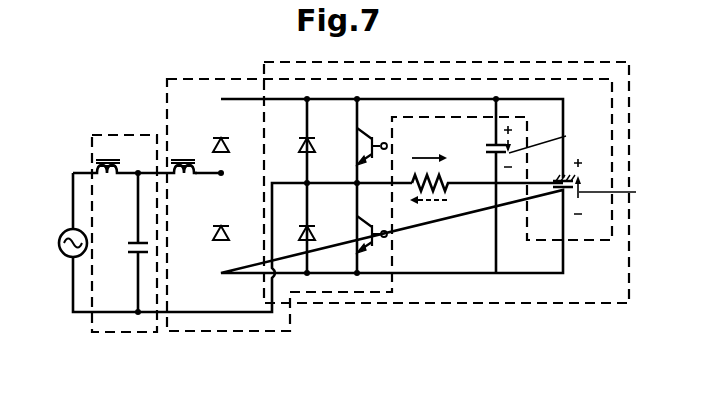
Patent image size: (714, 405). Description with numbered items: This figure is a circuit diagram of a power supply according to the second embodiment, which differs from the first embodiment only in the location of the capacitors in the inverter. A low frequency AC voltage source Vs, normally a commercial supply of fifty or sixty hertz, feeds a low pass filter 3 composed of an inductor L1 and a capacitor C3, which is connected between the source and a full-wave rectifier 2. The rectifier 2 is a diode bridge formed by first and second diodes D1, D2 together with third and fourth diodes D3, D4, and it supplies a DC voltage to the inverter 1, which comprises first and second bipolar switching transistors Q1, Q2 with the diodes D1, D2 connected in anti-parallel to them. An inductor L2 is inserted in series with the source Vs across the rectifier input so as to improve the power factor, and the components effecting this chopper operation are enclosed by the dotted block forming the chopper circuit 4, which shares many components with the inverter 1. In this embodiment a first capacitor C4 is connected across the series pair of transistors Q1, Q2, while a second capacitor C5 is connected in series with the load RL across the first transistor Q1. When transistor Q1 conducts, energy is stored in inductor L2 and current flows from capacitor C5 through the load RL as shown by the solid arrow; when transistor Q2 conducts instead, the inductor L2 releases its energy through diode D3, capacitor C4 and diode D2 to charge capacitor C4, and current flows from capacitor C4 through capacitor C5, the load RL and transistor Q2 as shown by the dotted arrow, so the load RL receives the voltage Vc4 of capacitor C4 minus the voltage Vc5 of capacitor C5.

The inverter 1 is at (461, 61).
The full-wave rectifier 2 is at (300, 255).
The low pass filter 3 is at (125, 334).
The chopper circuit 4 is at (220, 78).
The AC voltage source Vs is at (61, 256).
The capacitor C3 is at (125, 263).
The inductor L1 is at (121, 155).
The inductor L2 is at (183, 155).
The first diode D1 is at (293, 143).
The second diode D2 is at (294, 220).
The third diode D3 is at (237, 143).
The fourth diode D4 is at (236, 235).
The first switching transistor Q1 is at (357, 146).
The second switching transistor Q2 is at (357, 234).
The load RL is at (486, 183).
The second capacitor C5 is at (482, 146).
The first capacitor C4 is at (555, 187).
The voltage in second capacitor Vc5 is at (560, 136).
The voltage accumulated in first capacitor Vc4 is at (630, 192).